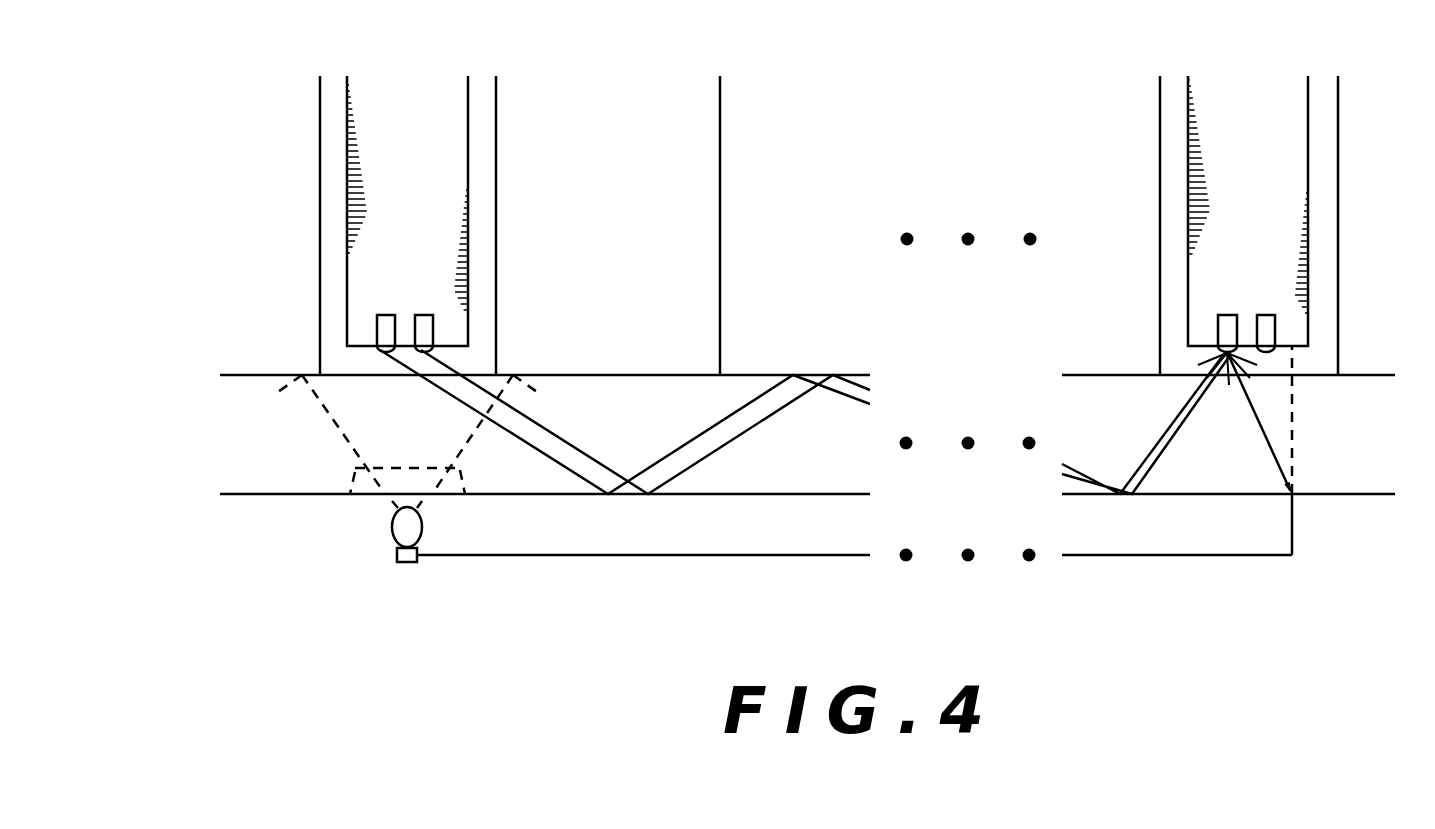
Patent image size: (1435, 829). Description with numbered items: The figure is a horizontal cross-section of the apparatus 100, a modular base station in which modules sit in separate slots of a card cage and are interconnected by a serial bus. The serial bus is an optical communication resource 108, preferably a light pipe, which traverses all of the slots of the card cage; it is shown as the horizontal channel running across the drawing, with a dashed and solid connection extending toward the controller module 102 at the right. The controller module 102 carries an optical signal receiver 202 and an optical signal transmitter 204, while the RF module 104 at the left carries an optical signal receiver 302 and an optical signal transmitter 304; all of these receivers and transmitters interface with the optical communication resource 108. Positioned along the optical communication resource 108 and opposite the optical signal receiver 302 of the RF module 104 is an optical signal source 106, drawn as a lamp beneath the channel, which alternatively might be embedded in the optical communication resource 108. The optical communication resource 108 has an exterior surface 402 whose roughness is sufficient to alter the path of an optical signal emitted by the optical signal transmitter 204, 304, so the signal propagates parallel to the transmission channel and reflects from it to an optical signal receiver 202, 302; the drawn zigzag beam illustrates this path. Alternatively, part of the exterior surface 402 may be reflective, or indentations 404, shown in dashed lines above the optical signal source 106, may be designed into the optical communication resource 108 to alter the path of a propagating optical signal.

The apparatus 100 is at (165, 63).
The controller module 102 is at (1249, 88).
The RF module 104 is at (408, 88).
The optical signal source 106 is at (407, 562).
The optical communication resource 108 is at (1345, 480).
The optical signal receiver 202 is at (1230, 333).
The optical signal transmitter 204 is at (1268, 333).
The optical signal receiver 302 is at (392, 331).
The optical signal transmitter 304 is at (437, 335).
The exterior surface 402 is at (534, 495).
The indentations 404 is at (352, 489).